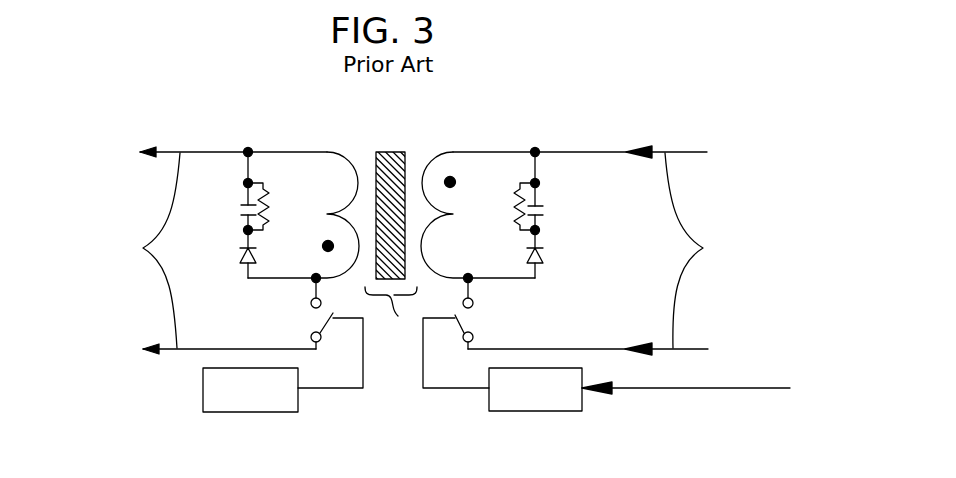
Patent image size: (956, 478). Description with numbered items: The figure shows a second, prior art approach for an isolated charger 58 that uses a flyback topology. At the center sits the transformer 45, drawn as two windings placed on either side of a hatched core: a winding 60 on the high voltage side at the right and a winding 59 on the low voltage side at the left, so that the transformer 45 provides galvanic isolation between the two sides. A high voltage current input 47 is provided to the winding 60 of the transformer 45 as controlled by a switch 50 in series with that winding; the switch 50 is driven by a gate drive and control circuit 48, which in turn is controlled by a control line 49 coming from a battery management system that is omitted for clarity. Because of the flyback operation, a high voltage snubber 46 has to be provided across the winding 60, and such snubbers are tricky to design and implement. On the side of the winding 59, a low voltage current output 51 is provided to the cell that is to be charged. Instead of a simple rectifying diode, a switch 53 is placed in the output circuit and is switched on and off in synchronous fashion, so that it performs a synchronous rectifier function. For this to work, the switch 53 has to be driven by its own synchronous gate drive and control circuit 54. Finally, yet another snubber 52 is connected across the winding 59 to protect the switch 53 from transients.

The transformer 45 is at (391, 315).
The high voltage snubber 46 is at (538, 201).
The high voltage current input 47 is at (702, 250).
The gate drive and control circuit 48 is at (525, 411).
The control line 49 is at (707, 389).
The switch 50 is at (460, 325).
The low voltage current output 51 is at (145, 250).
The snubber 52 is at (247, 216).
The switch 53 is at (329, 320).
The synchronous gate drive and control circuit 54 is at (265, 412).
The isolated charger 58 is at (411, 137).
The secondary winding 59 is at (345, 183).
The primary winding 60 is at (463, 183).